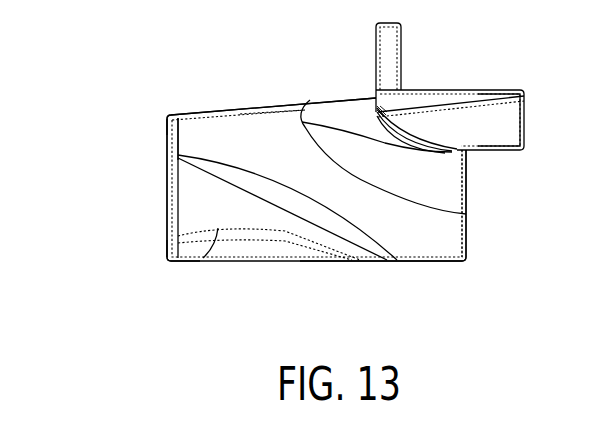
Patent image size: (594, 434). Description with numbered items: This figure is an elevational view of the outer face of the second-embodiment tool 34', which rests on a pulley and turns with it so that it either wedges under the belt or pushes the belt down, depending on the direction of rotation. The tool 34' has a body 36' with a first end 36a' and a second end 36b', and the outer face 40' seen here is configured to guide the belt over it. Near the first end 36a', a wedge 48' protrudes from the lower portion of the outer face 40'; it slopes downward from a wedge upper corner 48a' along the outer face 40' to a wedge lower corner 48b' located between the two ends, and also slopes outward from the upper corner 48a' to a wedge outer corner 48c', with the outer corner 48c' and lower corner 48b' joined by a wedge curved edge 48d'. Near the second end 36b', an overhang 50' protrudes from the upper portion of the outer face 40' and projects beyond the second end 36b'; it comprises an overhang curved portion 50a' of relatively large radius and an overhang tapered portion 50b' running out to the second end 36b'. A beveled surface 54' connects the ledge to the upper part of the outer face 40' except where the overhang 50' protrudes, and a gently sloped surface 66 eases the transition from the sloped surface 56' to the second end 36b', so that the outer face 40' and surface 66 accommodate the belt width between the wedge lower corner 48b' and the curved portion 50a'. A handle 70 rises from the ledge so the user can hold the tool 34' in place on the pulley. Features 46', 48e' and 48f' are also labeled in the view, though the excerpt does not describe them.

The tool 34' is at (290, 133).
The body 36' is at (272, 96).
The first end 36a' is at (136, 188).
The second end 36b' is at (496, 205).
The outer face 40' is at (431, 276).
The rear edge 46' is at (350, 292).
The wedge 48' is at (150, 188).
The wedge upper corner 48a' is at (137, 137).
The wedge lower corner 48b' is at (293, 240).
The wedge outer corner 48c' is at (148, 265).
The wedge curved edge 48d' is at (265, 281).
The flange brace 48e' is at (287, 207).
The flange recess 48f' is at (269, 268).
The overhang 50' is at (450, 95).
The overhang curved portion 50a' is at (384, 130).
The overhang tapered portion 50b' is at (527, 120).
The beveled surface 54' is at (273, 91).
The sloped surface 56' is at (383, 133).
The gently sloped surface 66 is at (445, 192).
The handle 70 is at (392, 40).